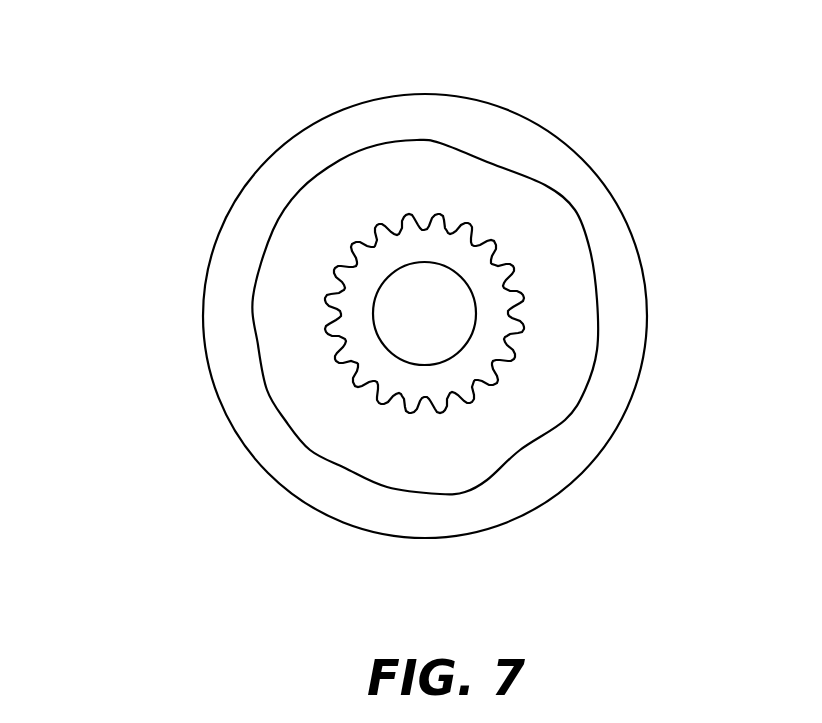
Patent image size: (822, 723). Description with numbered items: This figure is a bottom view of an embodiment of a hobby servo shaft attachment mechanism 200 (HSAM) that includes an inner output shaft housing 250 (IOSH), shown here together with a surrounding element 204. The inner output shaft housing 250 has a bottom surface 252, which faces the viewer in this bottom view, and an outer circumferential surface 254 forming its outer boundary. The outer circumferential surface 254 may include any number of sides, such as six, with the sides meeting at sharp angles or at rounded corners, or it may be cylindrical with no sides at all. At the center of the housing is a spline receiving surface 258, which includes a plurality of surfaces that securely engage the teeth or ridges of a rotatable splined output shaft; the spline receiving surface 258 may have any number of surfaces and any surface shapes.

The hobby servo shaft attachment mechanism 200 is at (222, 590).
The outer housing 204 is at (240, 243).
The inner output shaft housing 250 is at (504, 150).
The bottom surface 252 is at (552, 352).
The outer circumferential surface 254 is at (545, 440).
The spline receiving surface 258 is at (507, 262).